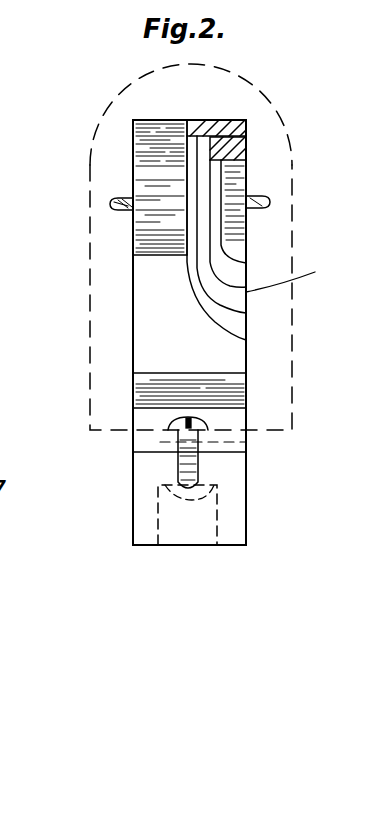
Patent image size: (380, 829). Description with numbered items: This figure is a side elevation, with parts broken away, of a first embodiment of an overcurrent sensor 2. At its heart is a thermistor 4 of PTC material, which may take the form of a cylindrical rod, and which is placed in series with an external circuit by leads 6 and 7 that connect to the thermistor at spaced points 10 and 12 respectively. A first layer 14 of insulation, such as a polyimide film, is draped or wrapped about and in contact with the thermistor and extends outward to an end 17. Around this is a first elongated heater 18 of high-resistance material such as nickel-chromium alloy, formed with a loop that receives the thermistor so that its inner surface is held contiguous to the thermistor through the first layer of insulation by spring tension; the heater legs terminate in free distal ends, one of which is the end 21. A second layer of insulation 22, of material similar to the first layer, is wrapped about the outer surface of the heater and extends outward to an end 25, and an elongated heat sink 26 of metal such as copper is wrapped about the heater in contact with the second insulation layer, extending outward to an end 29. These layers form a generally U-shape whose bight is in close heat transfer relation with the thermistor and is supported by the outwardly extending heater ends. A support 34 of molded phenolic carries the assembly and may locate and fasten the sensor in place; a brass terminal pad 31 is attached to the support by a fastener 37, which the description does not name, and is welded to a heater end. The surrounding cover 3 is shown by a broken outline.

The overcurrent sensor 2 is at (82, 92).
The cover 3 is at (285, 75).
The thermistor 4 is at (246, 178).
The lead 6 is at (292, 198).
The lead 7 is at (113, 205).
The spaced point 10 is at (124, 212).
The spaced point 12 is at (260, 211).
The first layer of insulation 14 is at (246, 160).
The end 17 is at (247, 447).
The first elongated heater 18 is at (246, 147).
The free distal end 21 is at (138, 418).
The second layer of insulation 22 is at (246, 137).
The end 25 is at (246, 410).
The heat sink 26 is at (226, 126).
The end 29 is at (145, 359).
The terminal pad 31 is at (138, 437).
The support 34 is at (233, 493).
The screw 37 is at (178, 470).